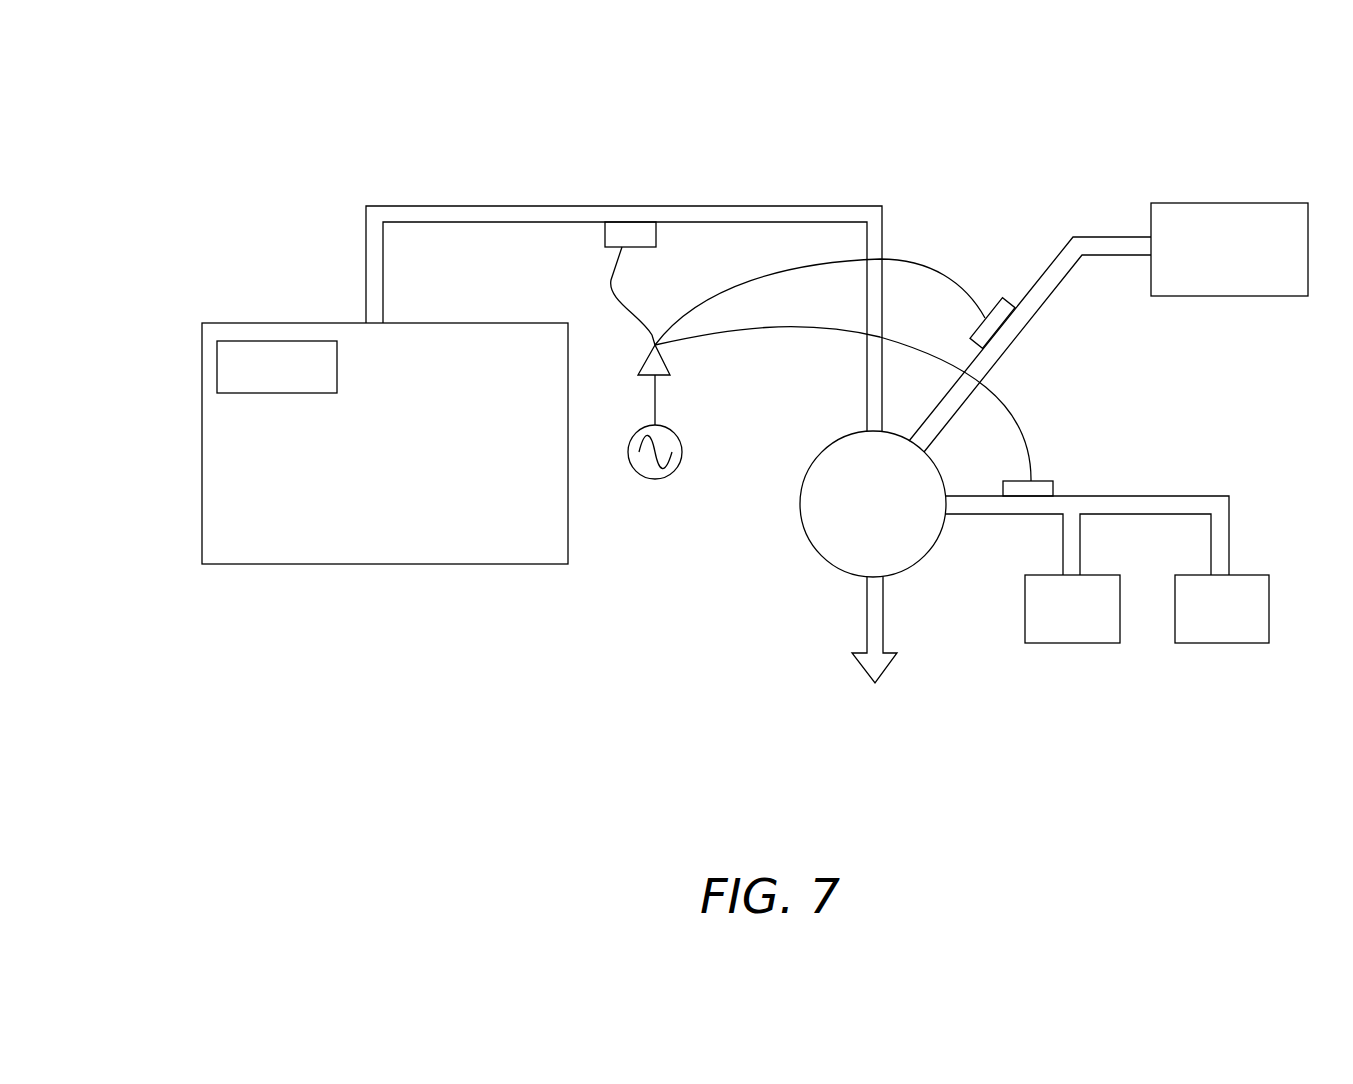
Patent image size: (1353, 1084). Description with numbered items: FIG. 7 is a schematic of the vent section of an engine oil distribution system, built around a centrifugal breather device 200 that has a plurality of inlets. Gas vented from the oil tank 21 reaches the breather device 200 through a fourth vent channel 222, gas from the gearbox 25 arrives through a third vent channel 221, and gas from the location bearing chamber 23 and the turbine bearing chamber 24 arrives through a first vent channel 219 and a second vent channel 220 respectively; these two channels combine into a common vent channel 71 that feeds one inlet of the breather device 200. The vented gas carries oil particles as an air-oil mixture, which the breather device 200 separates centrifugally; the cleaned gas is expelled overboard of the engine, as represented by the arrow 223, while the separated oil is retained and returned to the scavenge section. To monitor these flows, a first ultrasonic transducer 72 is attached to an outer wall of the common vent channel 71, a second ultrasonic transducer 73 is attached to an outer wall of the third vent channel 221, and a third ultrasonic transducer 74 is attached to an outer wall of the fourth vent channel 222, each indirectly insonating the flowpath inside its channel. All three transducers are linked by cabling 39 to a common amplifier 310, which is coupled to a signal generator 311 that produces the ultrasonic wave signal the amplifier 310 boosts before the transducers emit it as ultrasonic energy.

The oil tank 21 is at (201, 472).
The fourth vent channel 222 is at (535, 206).
The third ultrasonic transducer 74 is at (605, 236).
The cabling 39 is at (611, 279).
The amplifier 310 is at (669, 362).
The signal generator 311 is at (645, 480).
The centrifugal breather device 200 is at (802, 523).
The arrow 223 is at (867, 624).
The third vent channel 221 is at (1047, 302).
The second ultrasonic transducer 73 is at (988, 297).
The gearbox 25 is at (1233, 203).
The first ultrasonic transducer 72 is at (1038, 481).
The second vent channel 220 is at (1092, 509).
The common vent channel 71 is at (978, 514).
The first vent channel 219 is at (1080, 545).
The location bearing chamber 23 is at (1068, 643).
The turbine bearing chamber 24 is at (1218, 643).